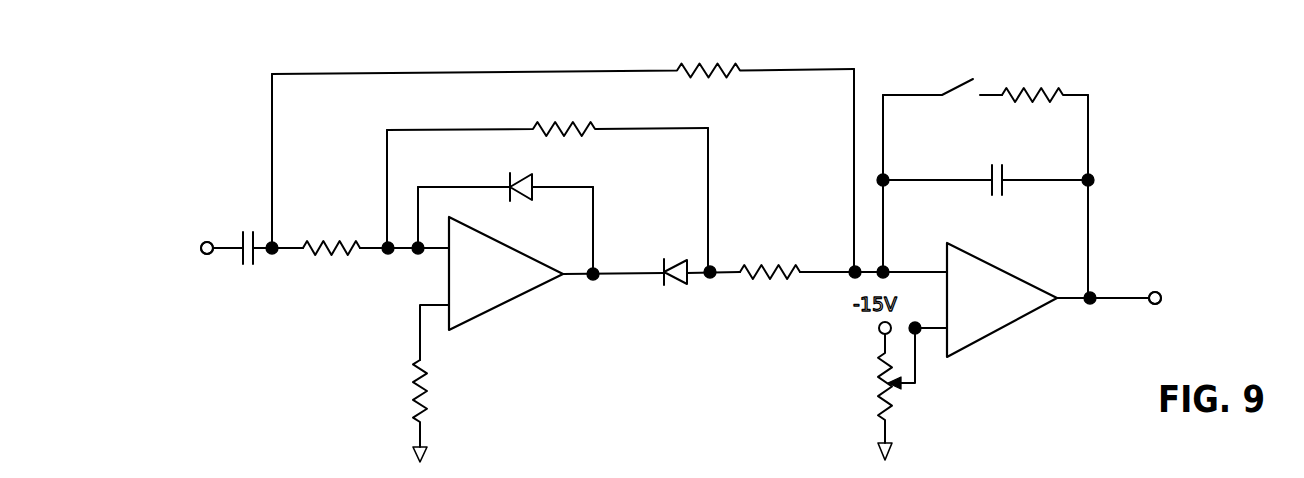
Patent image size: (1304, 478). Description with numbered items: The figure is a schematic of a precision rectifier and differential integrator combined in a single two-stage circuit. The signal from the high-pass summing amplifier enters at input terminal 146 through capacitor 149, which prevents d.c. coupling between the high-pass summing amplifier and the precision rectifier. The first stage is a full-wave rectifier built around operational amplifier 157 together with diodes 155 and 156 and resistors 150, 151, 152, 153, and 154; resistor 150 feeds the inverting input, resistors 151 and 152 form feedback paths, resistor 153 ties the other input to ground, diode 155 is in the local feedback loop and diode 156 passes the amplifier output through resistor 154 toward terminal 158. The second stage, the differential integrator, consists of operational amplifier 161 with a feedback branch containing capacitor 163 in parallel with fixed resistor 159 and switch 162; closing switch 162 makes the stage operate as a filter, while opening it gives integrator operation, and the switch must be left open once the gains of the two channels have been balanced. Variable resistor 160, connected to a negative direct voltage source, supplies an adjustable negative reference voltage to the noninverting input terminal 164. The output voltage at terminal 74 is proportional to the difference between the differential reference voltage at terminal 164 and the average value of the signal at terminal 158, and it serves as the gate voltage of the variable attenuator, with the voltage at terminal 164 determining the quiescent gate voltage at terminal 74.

The output terminal 74 is at (1163, 293).
The input terminal 146 is at (210, 256).
The capacitor 149 is at (242, 233).
The resistor 150 is at (329, 241).
The resistor 151 is at (716, 71).
The resistor 152 is at (558, 122).
The resistor 153 is at (416, 389).
The resistor 154 is at (772, 278).
The diode 155 is at (518, 176).
The diode 156 is at (676, 285).
The operational amplifier 157 is at (497, 286).
The terminal 158 is at (888, 268).
The fixed resistor 159 is at (1038, 83).
The variable resistor 160 is at (878, 383).
The operational amplifier 161 is at (997, 308).
The switch 162 is at (965, 95).
The capacitor 163 is at (1005, 185).
The noninverting input terminal 164 is at (918, 335).